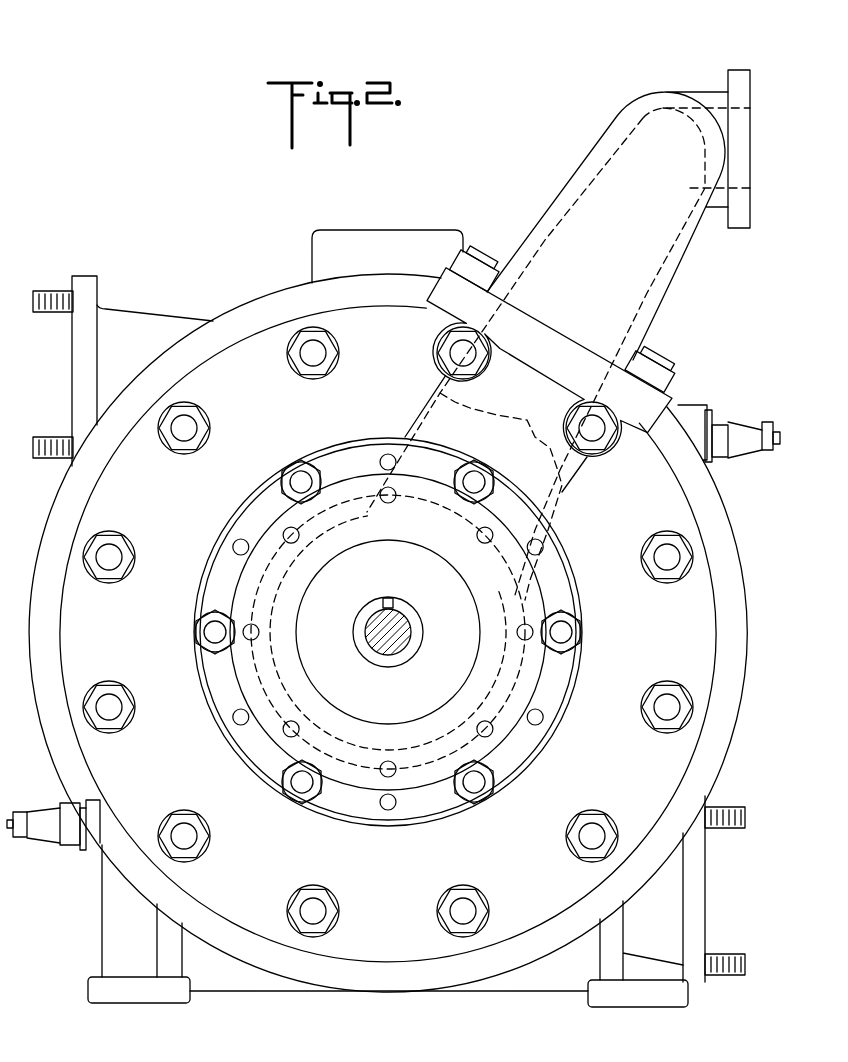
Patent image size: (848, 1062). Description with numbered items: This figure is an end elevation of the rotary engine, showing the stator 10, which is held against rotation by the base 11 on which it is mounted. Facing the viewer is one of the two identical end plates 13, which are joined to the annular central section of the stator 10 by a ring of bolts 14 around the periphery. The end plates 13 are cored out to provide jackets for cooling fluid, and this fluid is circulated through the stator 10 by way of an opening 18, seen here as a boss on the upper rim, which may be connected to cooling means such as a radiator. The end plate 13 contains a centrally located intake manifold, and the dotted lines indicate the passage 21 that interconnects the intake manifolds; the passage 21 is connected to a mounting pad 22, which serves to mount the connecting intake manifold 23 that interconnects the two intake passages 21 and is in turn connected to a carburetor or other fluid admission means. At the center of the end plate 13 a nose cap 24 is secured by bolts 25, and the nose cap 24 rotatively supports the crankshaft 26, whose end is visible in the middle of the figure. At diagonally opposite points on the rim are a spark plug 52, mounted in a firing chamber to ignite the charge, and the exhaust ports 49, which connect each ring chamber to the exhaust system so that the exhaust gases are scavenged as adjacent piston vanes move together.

The stator 10 is at (733, 536).
The base 11 is at (130, 993).
The end plates 13 is at (247, 355).
The bolts 14 is at (185, 432).
The opening 18 is at (358, 242).
The passage 21 is at (501, 496).
The mounting pad 22 is at (523, 347).
The connecting intake manifold 23 is at (672, 258).
The nose cap 24 is at (560, 570).
The bolts 25 is at (305, 480).
The crankshaft 26 is at (388, 643).
The exhaust ports 49 is at (135, 328).
The spark plug 52 is at (742, 432).